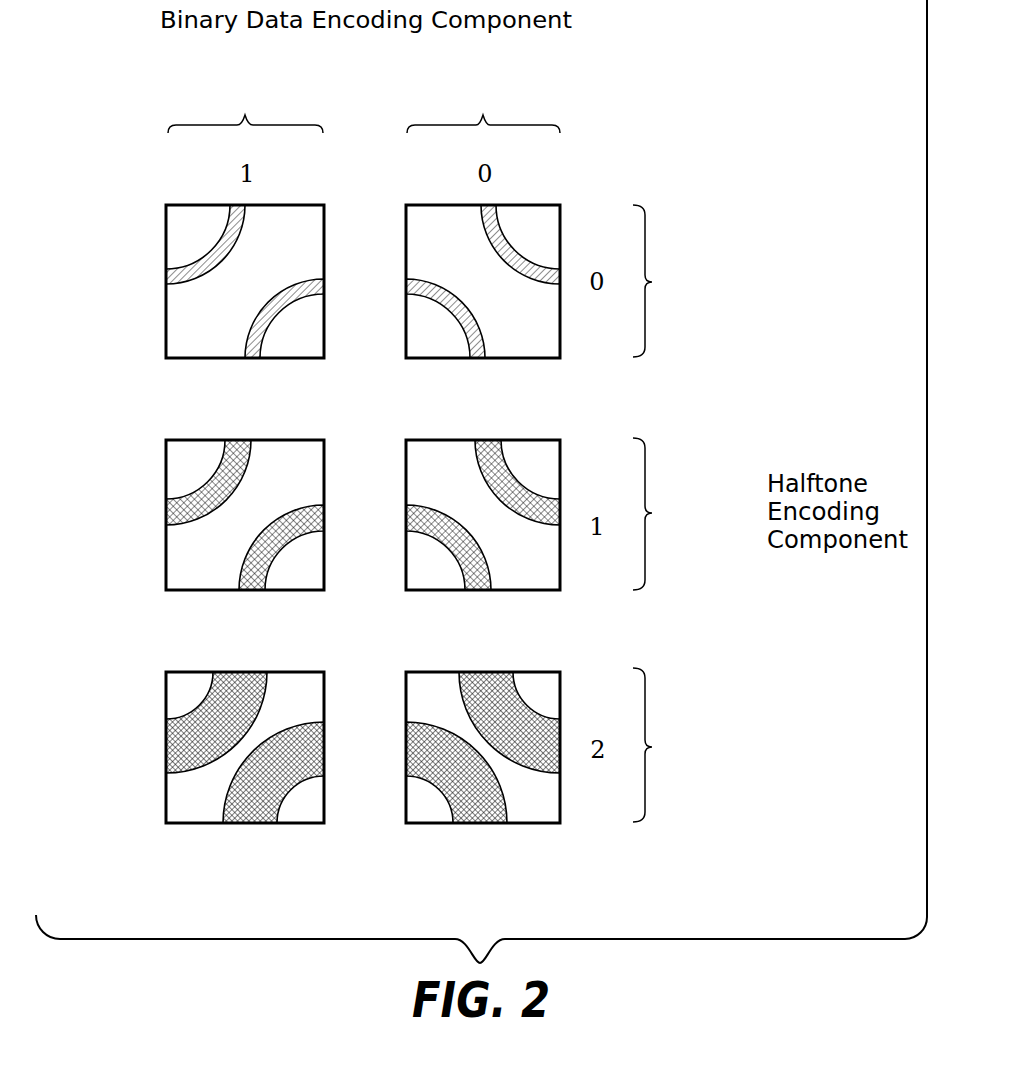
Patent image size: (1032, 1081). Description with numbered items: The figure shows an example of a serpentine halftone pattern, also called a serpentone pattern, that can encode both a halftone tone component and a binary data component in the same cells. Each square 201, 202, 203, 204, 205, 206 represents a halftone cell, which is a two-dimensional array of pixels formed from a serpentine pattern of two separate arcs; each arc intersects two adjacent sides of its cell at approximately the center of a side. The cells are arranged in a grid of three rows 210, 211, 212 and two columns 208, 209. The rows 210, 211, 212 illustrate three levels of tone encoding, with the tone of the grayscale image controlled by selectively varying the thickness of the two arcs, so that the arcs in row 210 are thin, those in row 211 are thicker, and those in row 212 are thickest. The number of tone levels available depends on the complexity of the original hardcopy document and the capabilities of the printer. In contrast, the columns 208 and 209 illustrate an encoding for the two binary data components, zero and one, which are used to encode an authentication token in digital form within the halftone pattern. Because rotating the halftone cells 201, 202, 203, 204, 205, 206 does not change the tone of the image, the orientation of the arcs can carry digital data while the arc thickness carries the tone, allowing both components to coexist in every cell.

The halftone cell 201 is at (193, 359).
The halftone cell 202 is at (440, 359).
The halftone cell 203 is at (193, 591).
The halftone cell 204 is at (440, 591).
The halftone cell 205 is at (193, 824).
The halftone cell 206 is at (440, 824).
The binary data component encoding 208 is at (504, 103).
The binary data component encoding 209 is at (267, 103).
The tone encoding row 210 is at (708, 292).
The tone encoding row 211 is at (708, 526).
The tone encoding row 212 is at (708, 758).